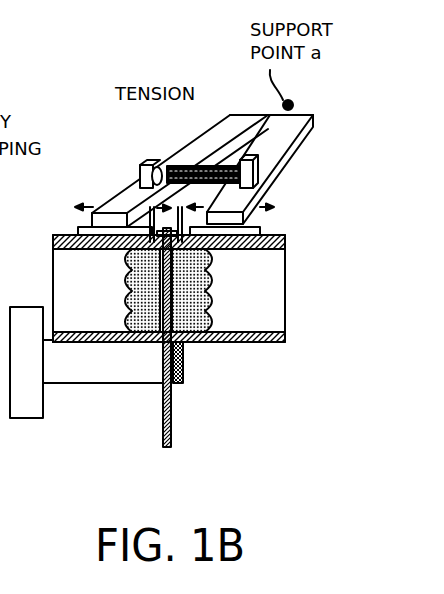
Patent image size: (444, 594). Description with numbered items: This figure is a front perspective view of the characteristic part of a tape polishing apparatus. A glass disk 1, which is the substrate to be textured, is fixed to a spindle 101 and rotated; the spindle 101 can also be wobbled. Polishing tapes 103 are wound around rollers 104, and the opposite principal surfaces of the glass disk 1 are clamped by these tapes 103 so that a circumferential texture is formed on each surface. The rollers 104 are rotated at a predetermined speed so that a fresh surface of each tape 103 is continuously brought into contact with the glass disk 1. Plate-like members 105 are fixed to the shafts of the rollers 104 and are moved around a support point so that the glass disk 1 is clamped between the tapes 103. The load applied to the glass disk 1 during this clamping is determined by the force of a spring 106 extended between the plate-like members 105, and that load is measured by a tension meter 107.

The glass disk 1 is at (173, 423).
The spindle 101 is at (98, 378).
The tape 103 is at (60, 288).
The roller 104 is at (245, 343).
The plate-like member 105 is at (282, 152).
The spring 106 is at (208, 163).
The tension meter 107 is at (152, 163).